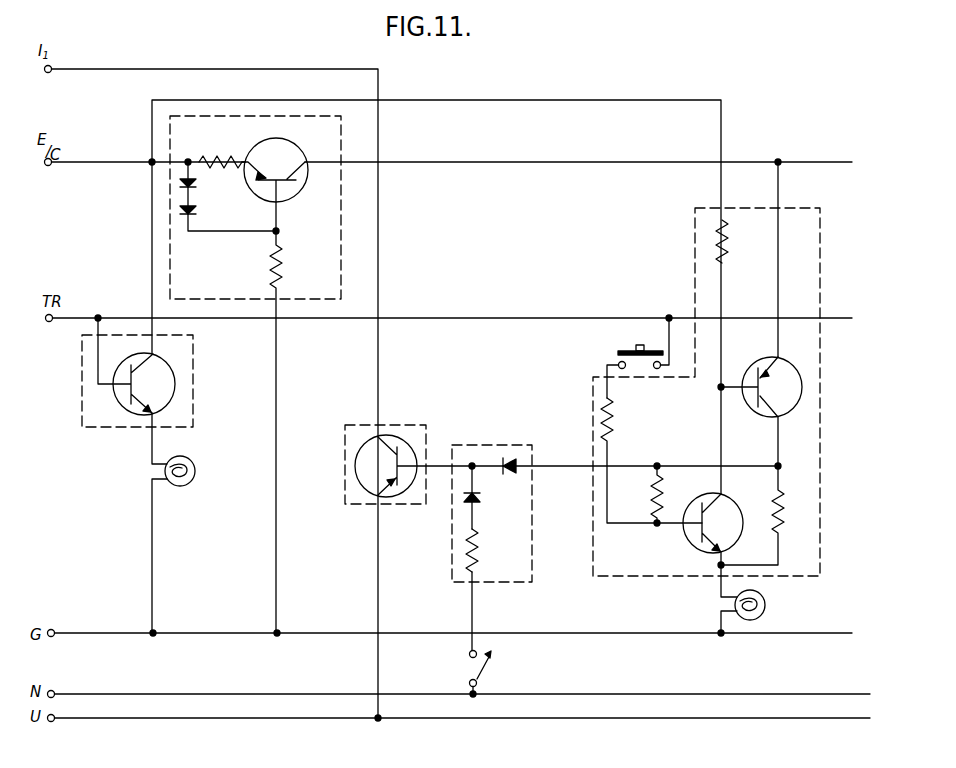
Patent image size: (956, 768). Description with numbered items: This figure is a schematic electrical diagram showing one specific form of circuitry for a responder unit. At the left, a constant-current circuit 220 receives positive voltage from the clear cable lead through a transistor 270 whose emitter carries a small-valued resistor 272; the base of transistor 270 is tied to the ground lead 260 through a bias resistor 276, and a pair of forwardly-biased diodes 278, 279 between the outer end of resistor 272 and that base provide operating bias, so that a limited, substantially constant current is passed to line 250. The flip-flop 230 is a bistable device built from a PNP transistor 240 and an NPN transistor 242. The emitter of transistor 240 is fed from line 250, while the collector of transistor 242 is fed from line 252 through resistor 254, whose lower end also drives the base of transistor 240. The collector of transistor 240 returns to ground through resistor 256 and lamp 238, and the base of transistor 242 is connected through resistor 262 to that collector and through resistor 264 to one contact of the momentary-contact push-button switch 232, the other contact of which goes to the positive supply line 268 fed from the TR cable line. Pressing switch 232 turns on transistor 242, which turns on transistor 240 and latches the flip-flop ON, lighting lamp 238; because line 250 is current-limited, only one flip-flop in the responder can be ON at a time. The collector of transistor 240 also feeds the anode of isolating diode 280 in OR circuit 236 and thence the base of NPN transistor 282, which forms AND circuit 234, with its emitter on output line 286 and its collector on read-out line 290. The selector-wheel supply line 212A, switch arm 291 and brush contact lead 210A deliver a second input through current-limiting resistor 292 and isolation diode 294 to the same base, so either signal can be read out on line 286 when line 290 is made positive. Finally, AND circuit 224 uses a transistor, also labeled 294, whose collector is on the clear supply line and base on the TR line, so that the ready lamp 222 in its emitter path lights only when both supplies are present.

The interrogate or read-out line 290 is at (272, 69).
The line 252 is at (518, 100).
The positive supply line 268 is at (624, 318).
The ground lead 260 is at (180, 633).
The line 212A is at (160, 694).
The output line 286 is at (185, 718).
The constant-current circuit 220 is at (240, 118).
The resistor 272 is at (229, 159).
The transistor 270 is at (290, 146).
The diode 278 is at (197, 184).
The diode 279 is at (197, 210).
The bias resistor 276 is at (268, 268).
The AND circuit 224 is at (194, 355).
The isolation diode 294 is at (480, 500).
The ready lamp 222 is at (196, 475).
The AND circuit 234 is at (393, 425).
The NPN transistor 282 is at (357, 478).
The OR circuit 236 is at (476, 445).
The isolating diode 280 is at (505, 475).
The current-limiting resistor 292 is at (477, 566).
The brush contact lead 210A is at (475, 612).
The switch arm 291 is at (485, 673).
The flip-flop 230 is at (695, 229).
The line 250 is at (753, 162).
The resistor 254 is at (727, 250).
The momentary-contact push-button switch 232 is at (631, 349).
The resistor 264 is at (615, 423).
The resistor 262 is at (652, 497).
The PNP transistor 240 is at (768, 418).
The NPN transistor 242 is at (726, 497).
The resistor 256 is at (774, 530).
The lamp 238 is at (766, 605).